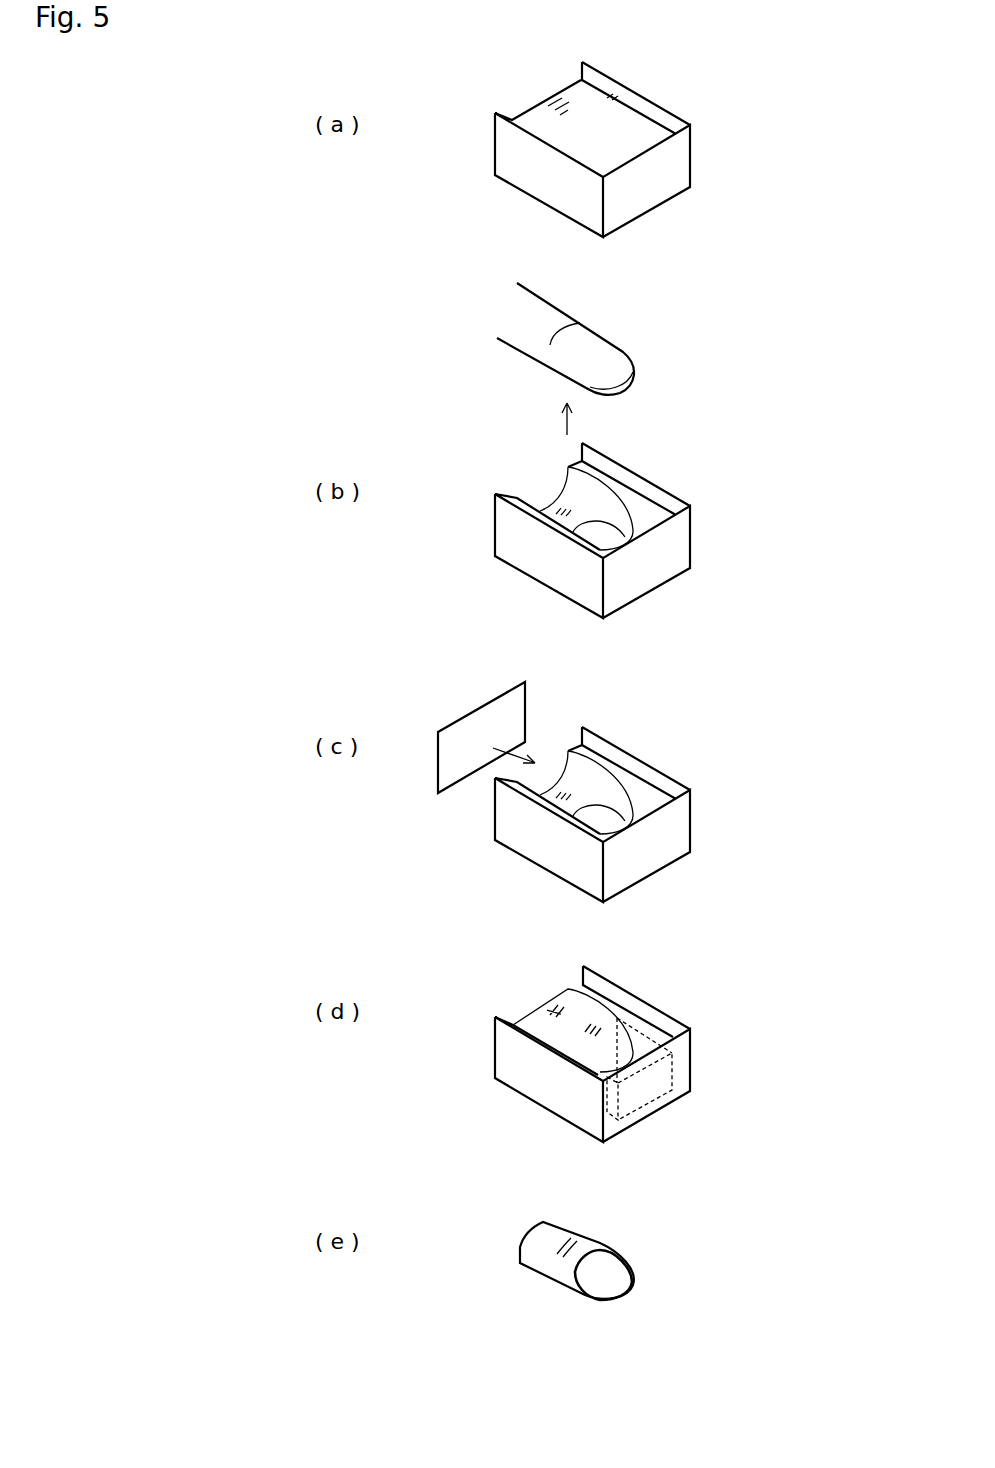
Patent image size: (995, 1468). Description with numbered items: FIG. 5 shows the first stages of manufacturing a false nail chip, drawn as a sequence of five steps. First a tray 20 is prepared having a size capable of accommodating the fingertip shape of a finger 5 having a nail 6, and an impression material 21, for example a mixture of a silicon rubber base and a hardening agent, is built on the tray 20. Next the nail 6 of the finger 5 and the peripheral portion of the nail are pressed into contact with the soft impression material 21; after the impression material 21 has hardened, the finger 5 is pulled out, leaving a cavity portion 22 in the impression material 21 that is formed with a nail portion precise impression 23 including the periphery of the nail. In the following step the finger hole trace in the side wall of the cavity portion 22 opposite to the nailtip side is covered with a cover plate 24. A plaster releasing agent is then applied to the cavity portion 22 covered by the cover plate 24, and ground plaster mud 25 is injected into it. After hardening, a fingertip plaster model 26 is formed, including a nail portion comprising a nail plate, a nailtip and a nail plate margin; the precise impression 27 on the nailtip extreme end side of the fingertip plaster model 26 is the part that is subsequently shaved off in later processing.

The finger 5 is at (590, 350).
The nail 6 is at (640, 380).
The tray 20 is at (627, 97).
The impression material 21 is at (553, 122).
The cavity portion 22 is at (583, 501).
The nail portion precise impression 23 is at (593, 530).
The cover plate 24 is at (487, 718).
The plaster mud 25 is at (567, 1018).
The fingertip plaster model 26 is at (613, 1050).
The precise impression 27 is at (643, 1095).